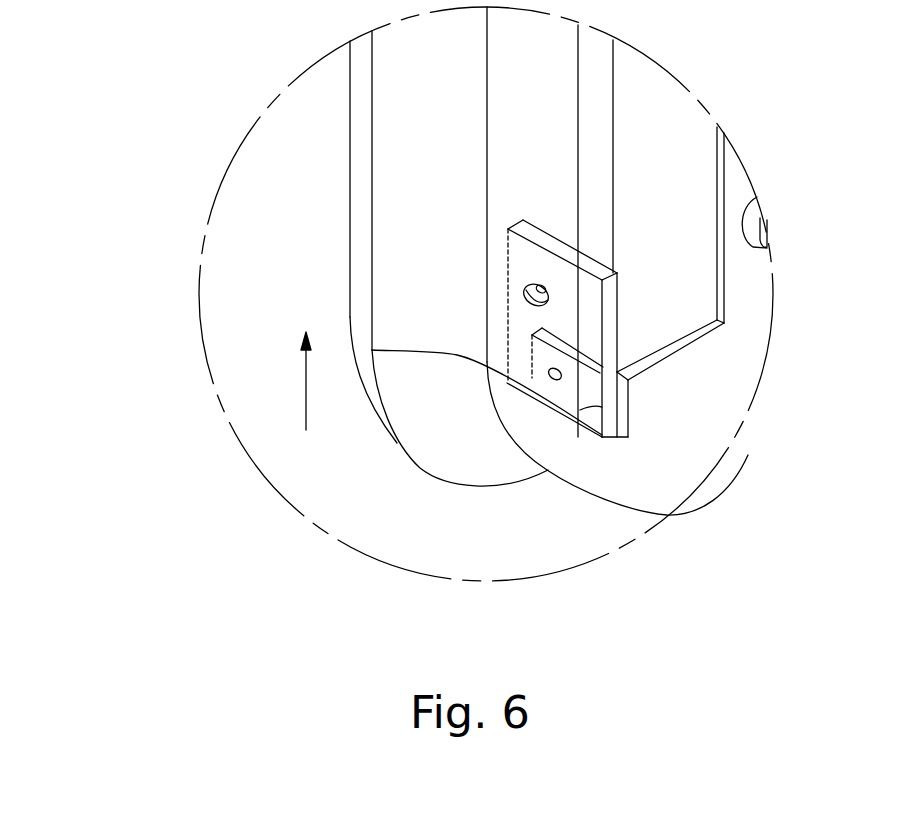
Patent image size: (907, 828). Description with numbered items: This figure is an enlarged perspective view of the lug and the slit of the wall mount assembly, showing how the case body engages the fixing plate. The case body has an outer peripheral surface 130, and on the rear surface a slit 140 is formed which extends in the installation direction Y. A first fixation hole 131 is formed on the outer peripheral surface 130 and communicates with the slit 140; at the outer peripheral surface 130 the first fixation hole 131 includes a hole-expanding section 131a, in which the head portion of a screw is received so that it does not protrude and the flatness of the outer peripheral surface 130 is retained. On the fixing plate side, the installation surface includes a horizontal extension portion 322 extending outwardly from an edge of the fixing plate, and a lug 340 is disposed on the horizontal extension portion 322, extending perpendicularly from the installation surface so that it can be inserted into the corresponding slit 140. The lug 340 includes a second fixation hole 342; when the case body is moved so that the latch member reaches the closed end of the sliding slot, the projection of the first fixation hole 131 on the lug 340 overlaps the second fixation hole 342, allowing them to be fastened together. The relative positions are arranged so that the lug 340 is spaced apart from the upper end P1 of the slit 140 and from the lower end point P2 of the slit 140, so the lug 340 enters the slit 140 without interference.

The outer peripheral surface 130 is at (494, 147).
The first fixation hole 131 is at (523, 281).
The hole-expanding section 131a is at (537, 307).
The slit 140 is at (614, 307).
The horizontal extension portion 322 is at (683, 372).
The lug 340 is at (628, 430).
The second fixation hole 342 is at (553, 380).
The upper end of the slit P1 is at (608, 277).
The lower end point of the slit P2 is at (602, 407).
The installation direction Y is at (306, 397).